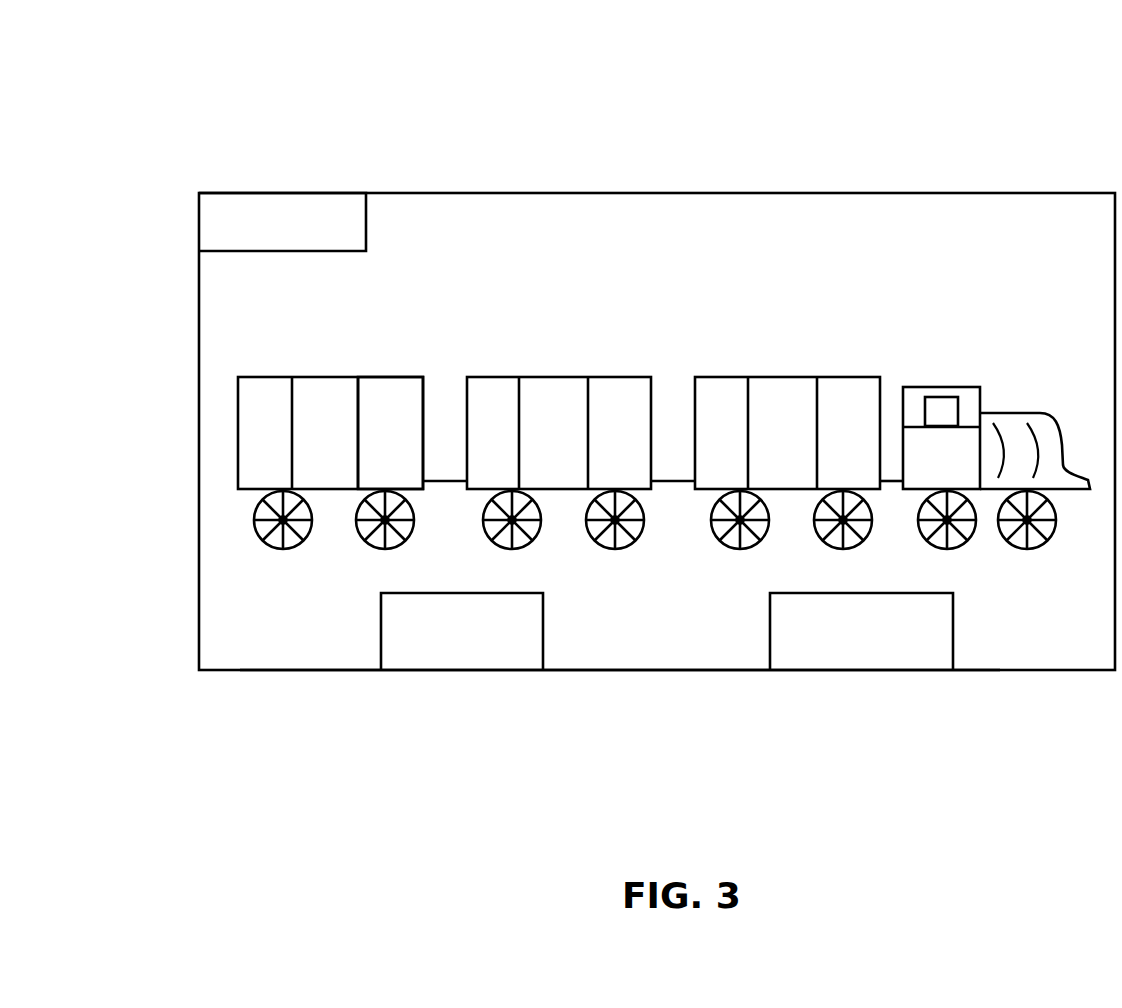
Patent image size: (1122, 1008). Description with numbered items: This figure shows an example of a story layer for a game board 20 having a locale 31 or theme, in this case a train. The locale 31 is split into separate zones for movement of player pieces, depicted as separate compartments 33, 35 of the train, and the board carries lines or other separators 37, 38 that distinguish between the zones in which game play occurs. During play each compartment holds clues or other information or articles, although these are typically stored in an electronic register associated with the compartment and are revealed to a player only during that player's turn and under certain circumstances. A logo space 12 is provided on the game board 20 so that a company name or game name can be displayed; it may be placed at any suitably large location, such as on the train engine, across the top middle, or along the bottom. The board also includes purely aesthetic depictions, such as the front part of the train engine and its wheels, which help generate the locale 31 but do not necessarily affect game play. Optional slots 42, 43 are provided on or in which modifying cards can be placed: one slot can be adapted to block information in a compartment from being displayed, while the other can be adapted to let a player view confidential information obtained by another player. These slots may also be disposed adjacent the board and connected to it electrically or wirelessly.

The logo space 12 is at (287, 215).
The game board 20 is at (832, 192).
The locale 31 is at (653, 338).
The compartment 33 is at (333, 405).
The compartment 35 is at (377, 405).
The separator 37 is at (519, 450).
The separator 38 is at (602, 697).
The slot 42 is at (456, 628).
The slot 43 is at (866, 633).